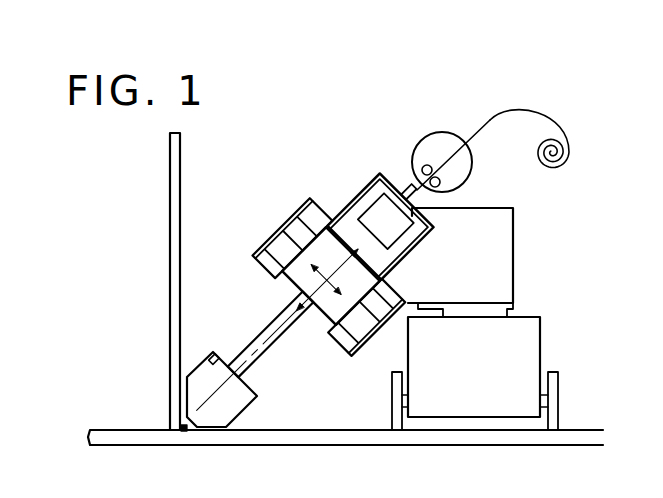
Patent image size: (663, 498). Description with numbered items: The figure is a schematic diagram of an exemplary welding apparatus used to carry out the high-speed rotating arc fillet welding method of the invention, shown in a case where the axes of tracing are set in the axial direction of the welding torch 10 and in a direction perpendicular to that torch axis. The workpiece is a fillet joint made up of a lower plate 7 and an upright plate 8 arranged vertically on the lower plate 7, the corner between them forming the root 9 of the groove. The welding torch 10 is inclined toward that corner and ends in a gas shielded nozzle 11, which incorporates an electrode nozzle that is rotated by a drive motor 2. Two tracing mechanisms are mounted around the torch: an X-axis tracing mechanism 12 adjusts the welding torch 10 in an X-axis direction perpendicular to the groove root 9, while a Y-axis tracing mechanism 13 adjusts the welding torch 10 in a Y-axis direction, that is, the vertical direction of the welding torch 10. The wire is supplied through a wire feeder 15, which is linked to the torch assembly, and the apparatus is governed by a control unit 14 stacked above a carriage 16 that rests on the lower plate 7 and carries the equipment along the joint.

The drive motor 2 is at (351, 221).
The lower plate 7 is at (284, 446).
The upright plate 8 is at (169, 308).
The root of a groove 9 is at (187, 432).
The welding torch 10 is at (258, 340).
The gas shielded nozzle 11 is at (230, 412).
The X-axis tracing mechanism 12 is at (291, 221).
The Y-axis tracing mechanism 13 is at (368, 186).
The control unit 14 is at (502, 236).
The wire feeder 15 is at (435, 142).
The carriage 16 is at (526, 322).